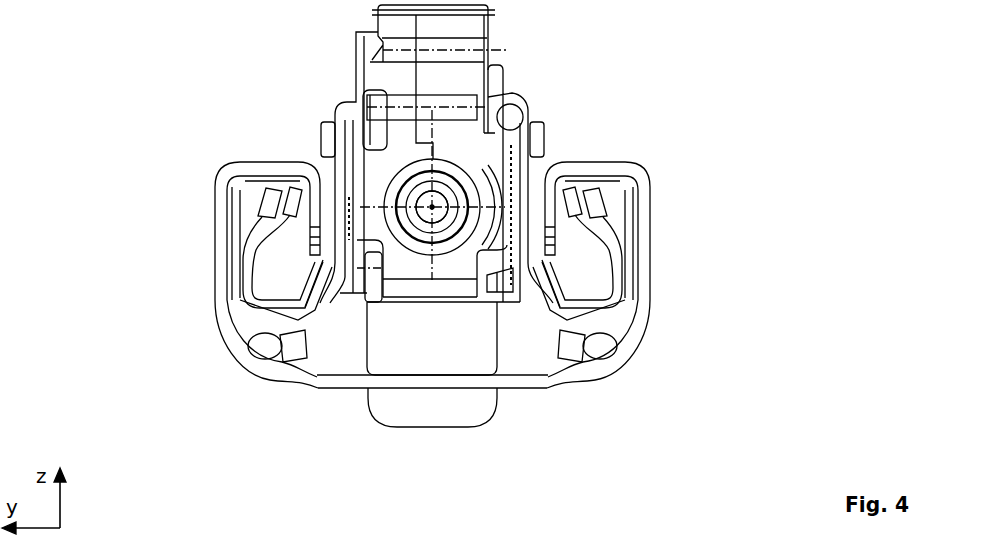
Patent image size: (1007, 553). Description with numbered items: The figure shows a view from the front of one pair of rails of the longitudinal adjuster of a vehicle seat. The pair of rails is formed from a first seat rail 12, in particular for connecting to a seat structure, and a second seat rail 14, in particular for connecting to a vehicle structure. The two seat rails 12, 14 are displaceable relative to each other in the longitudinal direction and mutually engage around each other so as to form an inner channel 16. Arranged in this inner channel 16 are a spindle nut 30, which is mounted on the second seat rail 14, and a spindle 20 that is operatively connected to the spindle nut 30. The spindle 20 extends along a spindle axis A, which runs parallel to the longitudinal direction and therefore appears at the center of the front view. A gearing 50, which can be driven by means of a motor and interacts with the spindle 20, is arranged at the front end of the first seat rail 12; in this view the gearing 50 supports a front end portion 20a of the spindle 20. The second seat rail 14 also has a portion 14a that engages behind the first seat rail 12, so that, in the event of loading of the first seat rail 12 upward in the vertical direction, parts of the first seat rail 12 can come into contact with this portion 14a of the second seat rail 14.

The first seat rail 12 is at (517, 100).
The second seat rail 14 is at (588, 167).
The portion of the second seat rail 14a is at (550, 240).
The inner channel 16 is at (528, 352).
The spindle 20 is at (422, 197).
The front end portion of the spindle 20a is at (432, 207).
The spindle nut 30 is at (447, 353).
The gearing 50 is at (373, 72).
The spindle axis A is at (432, 207).